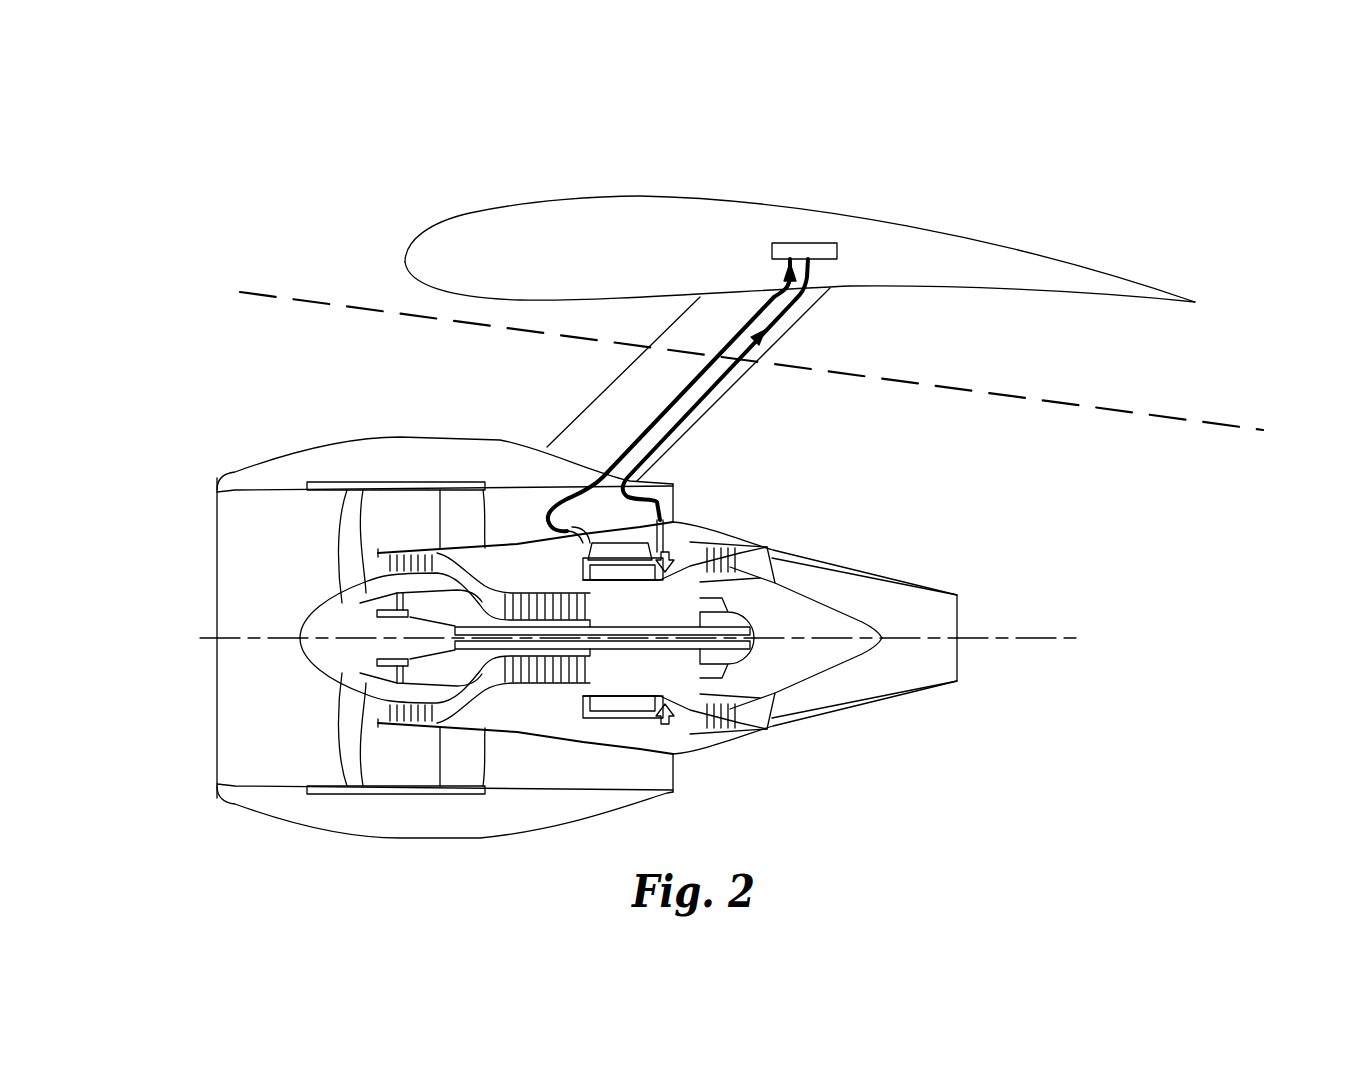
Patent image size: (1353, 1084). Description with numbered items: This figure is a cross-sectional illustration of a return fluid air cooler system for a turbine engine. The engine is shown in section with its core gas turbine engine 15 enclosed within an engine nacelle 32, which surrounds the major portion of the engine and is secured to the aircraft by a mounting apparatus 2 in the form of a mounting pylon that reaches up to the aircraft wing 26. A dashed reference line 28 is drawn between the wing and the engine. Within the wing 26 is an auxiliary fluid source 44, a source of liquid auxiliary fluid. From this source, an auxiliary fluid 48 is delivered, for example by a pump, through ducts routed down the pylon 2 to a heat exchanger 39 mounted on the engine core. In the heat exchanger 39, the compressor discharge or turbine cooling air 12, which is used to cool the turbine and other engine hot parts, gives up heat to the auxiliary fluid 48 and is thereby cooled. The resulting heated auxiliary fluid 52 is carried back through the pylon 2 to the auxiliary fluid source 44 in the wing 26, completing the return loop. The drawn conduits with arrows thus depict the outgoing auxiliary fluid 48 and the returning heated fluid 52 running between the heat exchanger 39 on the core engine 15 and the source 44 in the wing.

The mounting apparatus 2 is at (597, 390).
The turbine cooling air 12 is at (676, 552).
The core gas turbine engine 15 is at (788, 745).
The wing 26 is at (405, 262).
The aircraft reference boundary 28 is at (1258, 430).
The engine nacelle 32 is at (157, 418).
The heat exchanger 39 is at (621, 550).
The auxiliary fluid source 44 is at (830, 243).
The auxiliary fluid 48 is at (780, 328).
The heated auxiliary fluid 52 is at (748, 325).